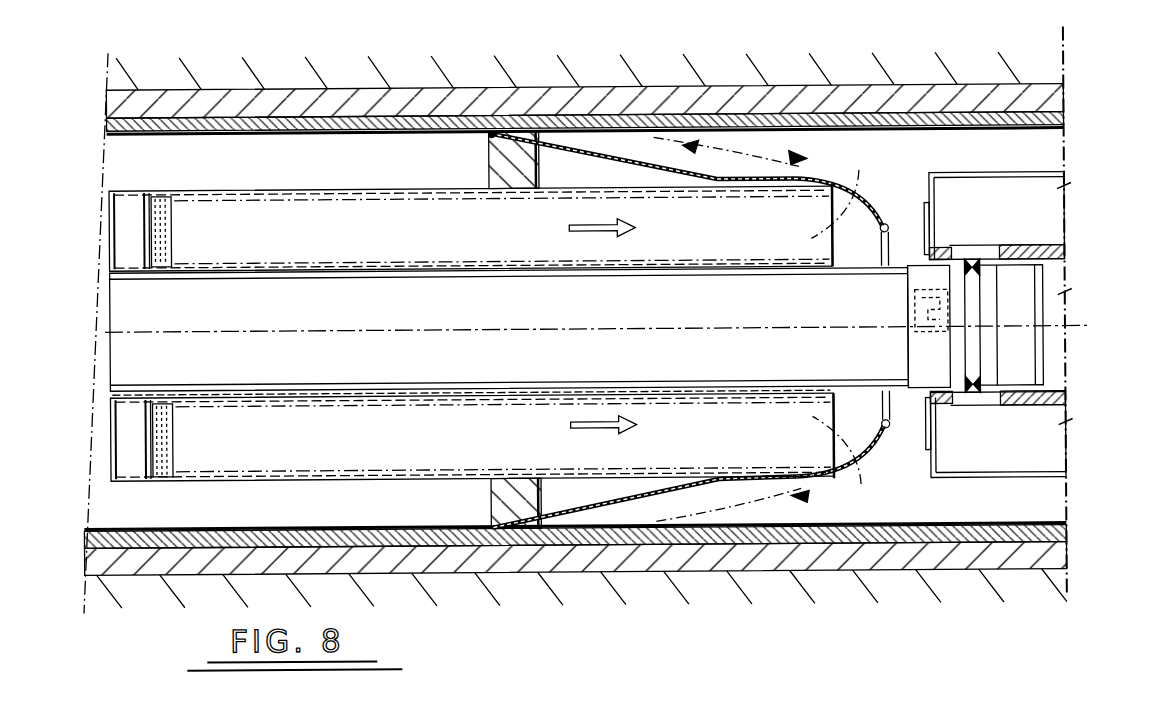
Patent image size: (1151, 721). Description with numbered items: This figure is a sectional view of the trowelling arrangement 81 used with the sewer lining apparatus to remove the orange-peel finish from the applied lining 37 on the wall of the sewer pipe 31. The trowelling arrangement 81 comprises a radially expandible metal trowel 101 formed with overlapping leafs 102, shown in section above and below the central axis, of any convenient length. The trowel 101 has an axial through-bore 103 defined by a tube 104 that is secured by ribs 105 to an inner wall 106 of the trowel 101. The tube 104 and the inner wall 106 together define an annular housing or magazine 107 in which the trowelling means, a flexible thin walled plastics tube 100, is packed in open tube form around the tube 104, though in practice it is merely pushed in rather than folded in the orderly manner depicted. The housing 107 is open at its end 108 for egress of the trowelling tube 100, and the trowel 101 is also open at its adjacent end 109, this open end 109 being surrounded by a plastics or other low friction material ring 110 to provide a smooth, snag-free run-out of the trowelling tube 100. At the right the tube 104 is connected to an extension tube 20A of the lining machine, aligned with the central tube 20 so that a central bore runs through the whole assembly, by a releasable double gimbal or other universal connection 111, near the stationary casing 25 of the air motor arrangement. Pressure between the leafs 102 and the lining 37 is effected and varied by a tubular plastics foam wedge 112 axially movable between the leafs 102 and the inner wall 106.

The central tube 20 is at (1050, 308).
The extension tube 20A is at (967, 400).
The stationary surrounding casing 25 is at (967, 177).
The sewer pipe 31 is at (566, 96).
The applied lining 37 is at (498, 135).
The trowelling arrangement 81 is at (740, 98).
The flexible thin walled plastics tube 100 is at (805, 112).
The radially expandible metal trowel 101 is at (840, 192).
The overlapping leafs 102 is at (613, 158).
The axial through-bore 103 is at (160, 352).
The tube 104 is at (276, 392).
The ribs 105 is at (130, 232).
The inner wall 106 is at (440, 537).
The annular housing 107 is at (313, 237).
The open end of housing 108 is at (840, 212).
The open end of trowel 109 is at (893, 232).
The low friction material ring 110 is at (888, 432).
The universal connection 111 is at (955, 246).
The tubular plastics foam wedge 112 is at (492, 132).